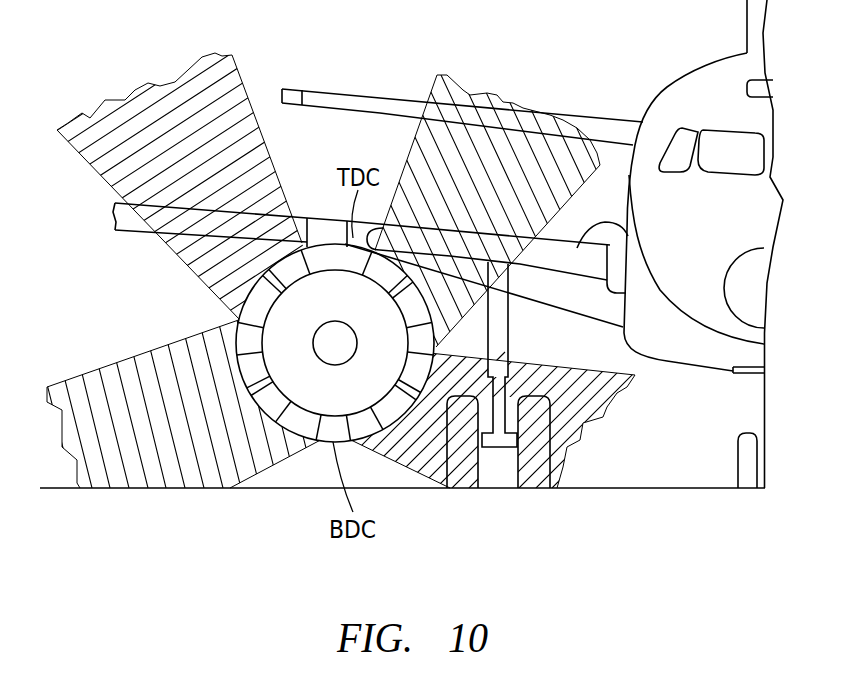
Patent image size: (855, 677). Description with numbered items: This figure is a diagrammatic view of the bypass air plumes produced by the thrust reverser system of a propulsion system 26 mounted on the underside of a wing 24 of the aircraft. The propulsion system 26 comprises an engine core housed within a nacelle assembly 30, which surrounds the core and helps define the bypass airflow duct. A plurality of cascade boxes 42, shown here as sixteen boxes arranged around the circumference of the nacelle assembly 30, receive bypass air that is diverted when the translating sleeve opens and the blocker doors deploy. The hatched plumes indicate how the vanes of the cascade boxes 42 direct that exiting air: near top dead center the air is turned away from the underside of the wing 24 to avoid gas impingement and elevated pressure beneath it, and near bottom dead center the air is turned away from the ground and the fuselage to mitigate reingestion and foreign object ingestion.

The wing 24 is at (603, 224).
The propulsion system 26 is at (203, 314).
The nacelle assembly 30 is at (330, 241).
The cascade boxes 42 is at (260, 390).